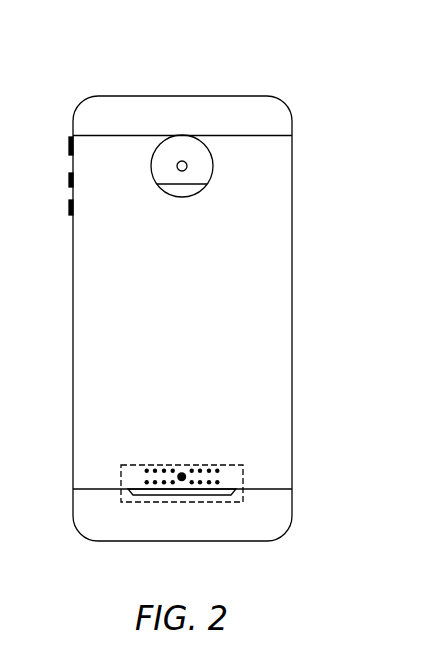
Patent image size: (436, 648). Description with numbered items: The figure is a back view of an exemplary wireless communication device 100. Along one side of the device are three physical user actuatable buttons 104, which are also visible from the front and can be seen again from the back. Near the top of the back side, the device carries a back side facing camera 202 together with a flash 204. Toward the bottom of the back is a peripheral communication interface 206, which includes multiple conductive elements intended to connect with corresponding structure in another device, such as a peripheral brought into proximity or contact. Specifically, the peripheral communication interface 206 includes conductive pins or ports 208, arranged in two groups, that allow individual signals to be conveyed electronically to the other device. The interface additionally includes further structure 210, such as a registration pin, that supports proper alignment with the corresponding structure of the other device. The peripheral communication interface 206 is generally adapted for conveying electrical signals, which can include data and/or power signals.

The wireless communication device 100 is at (285, 59).
The physical user actuatable buttons 104 is at (69, 148).
The back side facing camera 202 is at (177, 166).
The flash 204 is at (182, 197).
The peripheral communication interface 206 is at (243, 483).
The conductive pins or ports 208 is at (177, 463).
The registration pin 210 is at (182, 481).